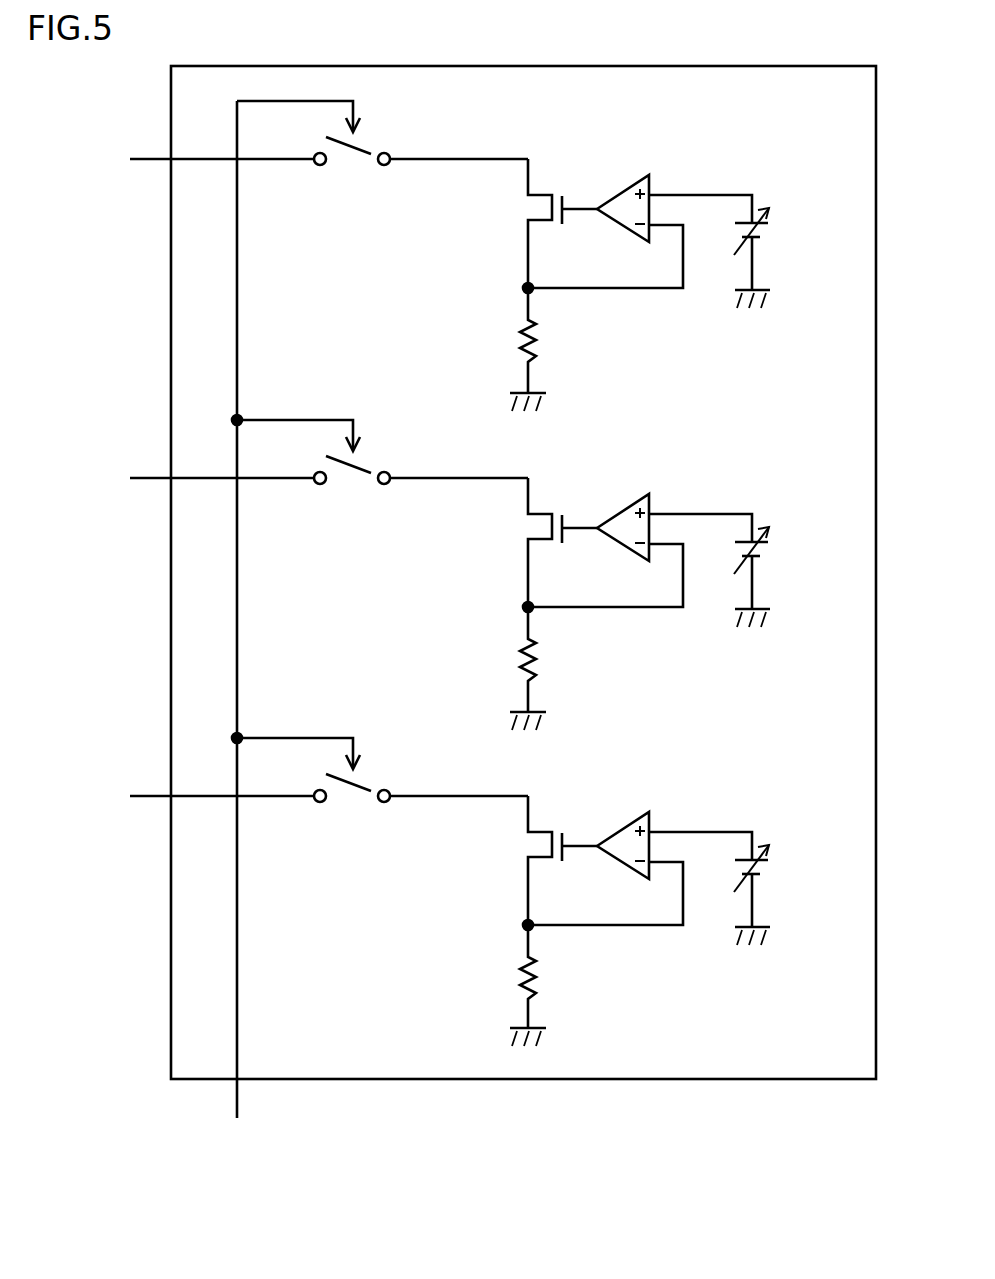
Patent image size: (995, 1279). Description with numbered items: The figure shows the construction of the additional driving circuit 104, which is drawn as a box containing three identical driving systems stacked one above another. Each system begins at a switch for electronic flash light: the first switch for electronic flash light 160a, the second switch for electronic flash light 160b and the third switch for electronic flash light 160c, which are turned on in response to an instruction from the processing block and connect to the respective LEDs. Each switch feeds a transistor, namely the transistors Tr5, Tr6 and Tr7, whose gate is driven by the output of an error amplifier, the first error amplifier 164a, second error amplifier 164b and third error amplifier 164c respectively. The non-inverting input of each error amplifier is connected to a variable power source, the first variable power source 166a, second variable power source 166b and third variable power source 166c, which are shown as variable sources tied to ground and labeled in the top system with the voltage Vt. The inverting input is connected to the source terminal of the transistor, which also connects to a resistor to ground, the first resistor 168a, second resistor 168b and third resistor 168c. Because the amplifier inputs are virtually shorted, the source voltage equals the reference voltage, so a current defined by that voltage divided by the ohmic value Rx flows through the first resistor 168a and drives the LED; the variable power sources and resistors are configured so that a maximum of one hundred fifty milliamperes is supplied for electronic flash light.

The additional driving circuit 104 is at (547, 1187).
The first switch for electronic flash light 160a is at (355, 166).
The second switch for electronic flash light 160b is at (357, 508).
The third switch for electronic flash light 160c is at (357, 826).
The transistor Tr5 is at (527, 207).
The transistor Tr6 is at (518, 542).
The transistor Tr7 is at (518, 860).
The first error amplifier 164a is at (623, 188).
The second error amplifier 164b is at (608, 501).
The third error amplifier 164c is at (608, 819).
The first variable power source 166a is at (796, 258).
The second variable power source 166b is at (796, 577).
The third variable power source 166c is at (796, 895).
The first resistor 168a is at (563, 349).
The second resistor 168b is at (576, 668).
The third resistor 168c is at (576, 985).
The ohmic value of the first resistor Rx is at (499, 344).
The threshold voltage Vt is at (766, 232).